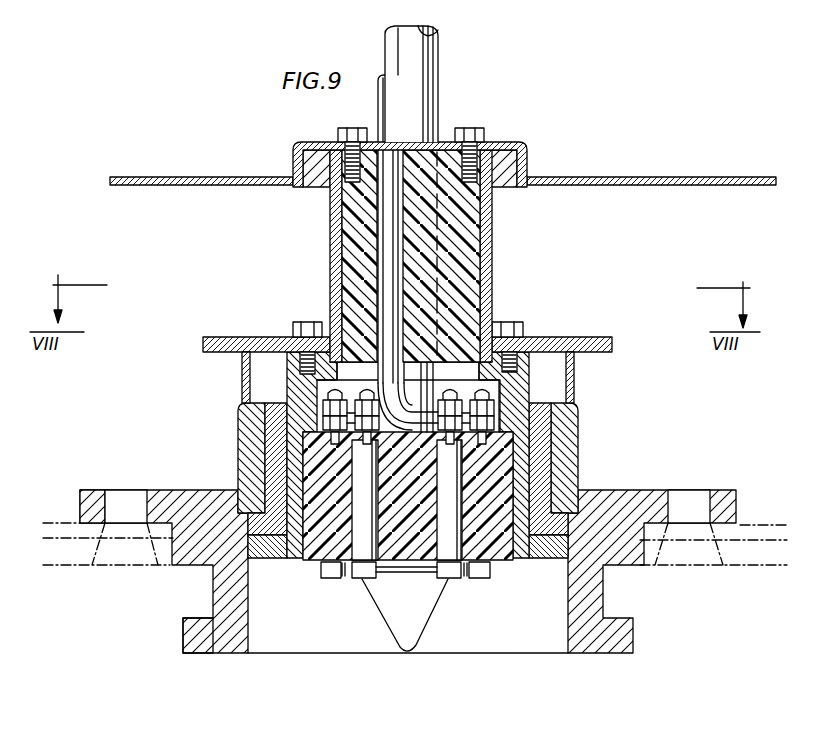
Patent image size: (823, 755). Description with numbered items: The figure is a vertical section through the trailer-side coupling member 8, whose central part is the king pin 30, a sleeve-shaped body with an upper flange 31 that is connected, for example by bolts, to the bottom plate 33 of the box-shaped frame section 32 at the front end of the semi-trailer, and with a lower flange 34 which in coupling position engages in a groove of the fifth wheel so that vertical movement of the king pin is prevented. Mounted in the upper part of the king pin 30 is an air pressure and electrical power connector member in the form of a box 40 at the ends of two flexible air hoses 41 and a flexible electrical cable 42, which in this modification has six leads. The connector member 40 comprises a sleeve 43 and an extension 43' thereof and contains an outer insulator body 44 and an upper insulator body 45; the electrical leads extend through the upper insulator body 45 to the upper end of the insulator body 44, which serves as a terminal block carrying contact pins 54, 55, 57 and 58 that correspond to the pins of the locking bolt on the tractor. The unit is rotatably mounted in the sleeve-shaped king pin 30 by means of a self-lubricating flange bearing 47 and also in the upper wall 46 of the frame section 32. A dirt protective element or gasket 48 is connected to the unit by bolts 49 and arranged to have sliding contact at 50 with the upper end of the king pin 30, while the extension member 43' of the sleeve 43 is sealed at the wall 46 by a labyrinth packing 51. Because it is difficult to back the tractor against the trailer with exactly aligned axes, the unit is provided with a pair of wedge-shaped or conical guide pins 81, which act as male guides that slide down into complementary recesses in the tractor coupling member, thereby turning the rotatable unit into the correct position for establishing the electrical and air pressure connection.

The coupling member 8 is at (703, 462).
The king pin 30 is at (226, 595).
The upper flange 31 is at (100, 492).
The frame section 32 is at (647, 147).
The bottom plate 33 is at (62, 528).
The flange 34 is at (194, 642).
The connector member 40 is at (333, 294).
The flexible air hoses 41 is at (437, 72).
The flexible electrical cables 42 is at (382, 120).
The sleeve 43 is at (457, 455).
The extension 43' is at (516, 256).
The outer insulator body 44 is at (503, 484).
The upper insulator body 45 is at (487, 213).
The upper wall 46 is at (222, 177).
The self-lubricating flange bearing 47 is at (265, 472).
The dirt protective element 48 is at (606, 304).
The bolts 49 is at (522, 327).
The sliding contact 50 is at (576, 386).
The labyrinth packing 51 is at (528, 166).
The contact pin 54 is at (360, 577).
The contact pin 55 is at (332, 580).
The contact pin 57 is at (492, 580).
The contact pin 58 is at (453, 582).
The guide pins 81 is at (392, 613).